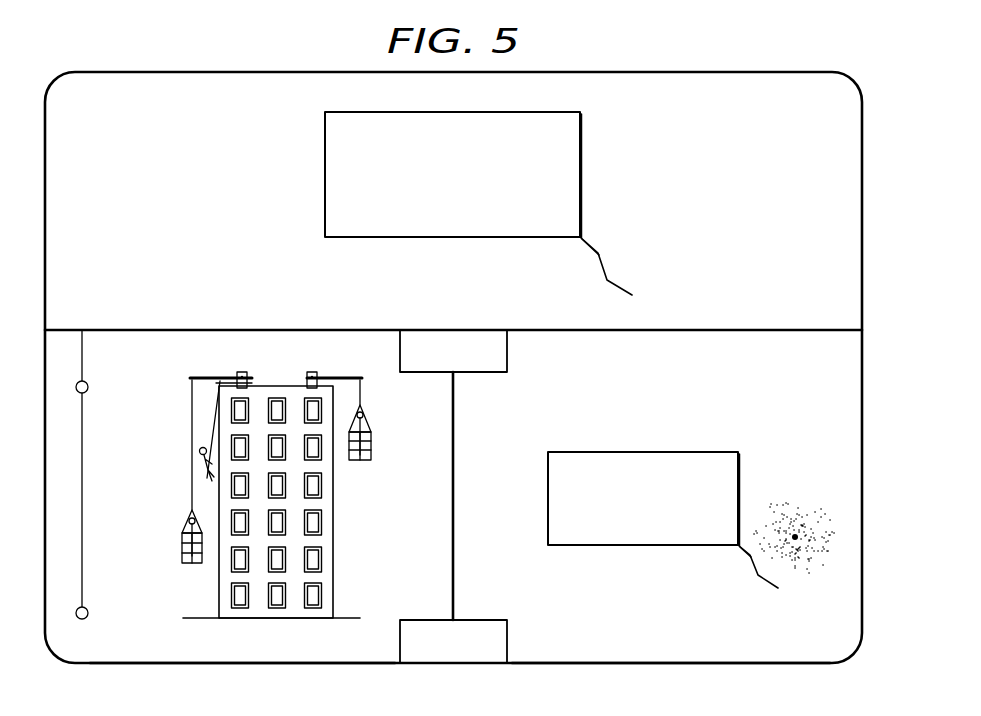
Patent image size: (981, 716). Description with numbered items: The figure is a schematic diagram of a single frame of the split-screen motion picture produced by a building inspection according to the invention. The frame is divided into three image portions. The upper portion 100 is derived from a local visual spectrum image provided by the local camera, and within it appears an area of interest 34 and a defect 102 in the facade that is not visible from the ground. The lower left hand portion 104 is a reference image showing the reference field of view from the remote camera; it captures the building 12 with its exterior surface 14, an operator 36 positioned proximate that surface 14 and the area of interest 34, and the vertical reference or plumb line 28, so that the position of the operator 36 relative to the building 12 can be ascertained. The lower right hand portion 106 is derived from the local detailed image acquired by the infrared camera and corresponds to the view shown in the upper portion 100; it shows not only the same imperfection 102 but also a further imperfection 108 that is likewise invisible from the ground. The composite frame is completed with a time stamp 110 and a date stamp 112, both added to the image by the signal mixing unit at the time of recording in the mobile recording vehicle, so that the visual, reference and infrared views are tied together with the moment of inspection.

The upper portion 100 is at (202, 80).
The area of interest 34 is at (231, 198).
The defect 102 is at (595, 240).
The further imperfection 108 is at (794, 454).
The time stamp 110 is at (475, 375).
The date stamp 112 is at (473, 620).
The plumb line 28 is at (82, 478).
The building 12 is at (367, 542).
The exterior surface 14 is at (218, 588).
The operator 36 is at (170, 456).
The lower left hand portion 104 is at (168, 653).
The lower right hand portion 106 is at (738, 655).